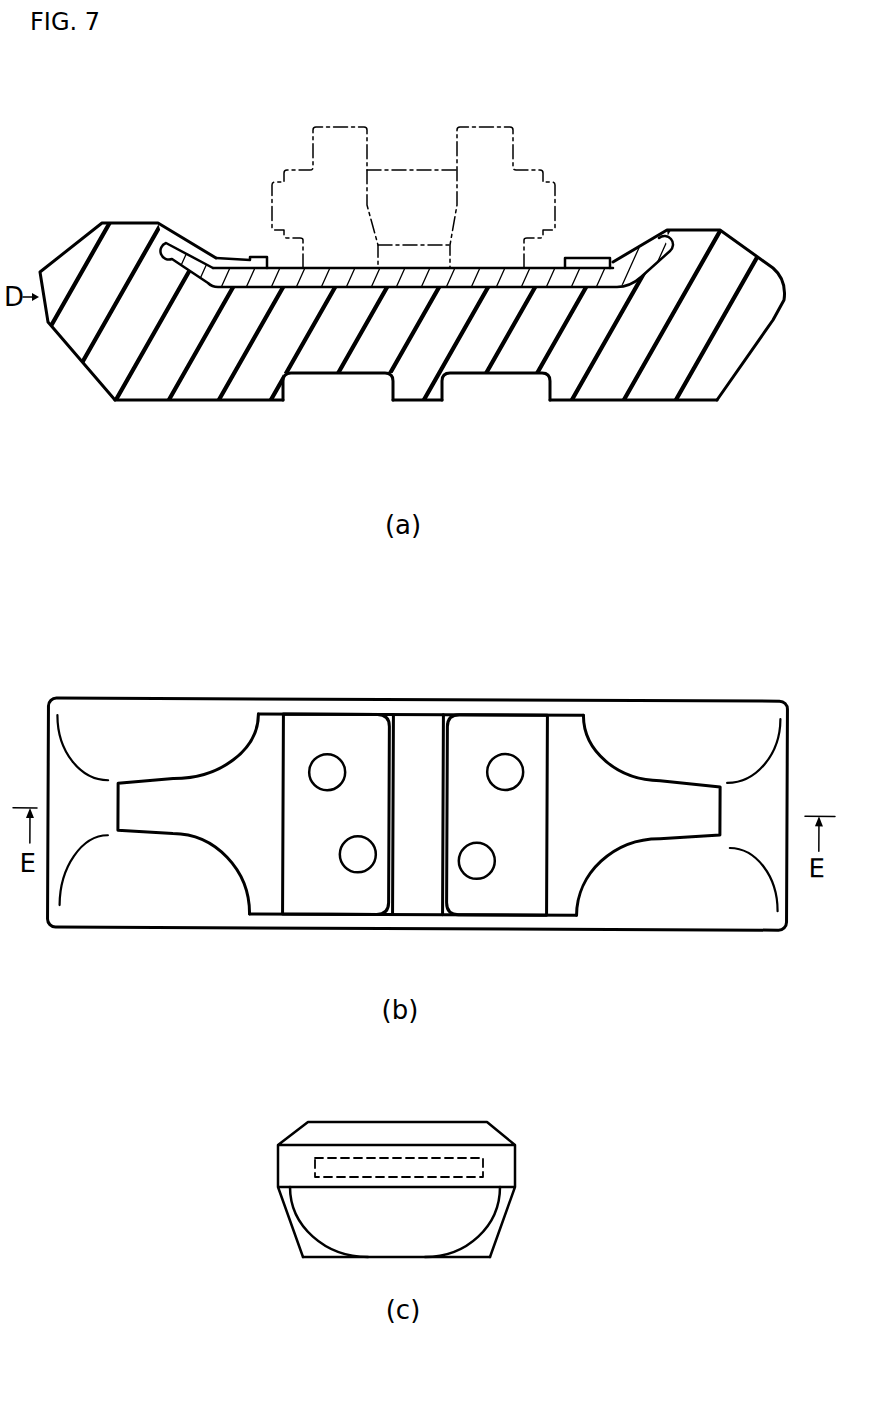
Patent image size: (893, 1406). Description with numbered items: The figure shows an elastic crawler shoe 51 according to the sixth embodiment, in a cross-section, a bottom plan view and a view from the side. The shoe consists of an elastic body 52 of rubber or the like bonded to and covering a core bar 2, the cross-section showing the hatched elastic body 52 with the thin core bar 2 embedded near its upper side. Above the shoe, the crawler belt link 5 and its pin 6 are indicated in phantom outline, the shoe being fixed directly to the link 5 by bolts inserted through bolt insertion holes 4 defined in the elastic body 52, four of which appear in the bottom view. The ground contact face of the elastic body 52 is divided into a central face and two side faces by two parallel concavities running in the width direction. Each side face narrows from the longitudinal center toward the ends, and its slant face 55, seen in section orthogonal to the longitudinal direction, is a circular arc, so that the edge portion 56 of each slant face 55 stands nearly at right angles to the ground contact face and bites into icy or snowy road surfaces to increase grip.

The core bar 2 is at (573, 271).
The bolt insertion hole 4 is at (330, 755).
The crawler belt link 5 is at (316, 160).
The pin 6 is at (427, 168).
The elastic crawler shoe 51 is at (671, 204).
The elastic body 52 is at (740, 252).
The slant face 55 is at (337, 1210).
The edge portion 56 is at (368, 1257).